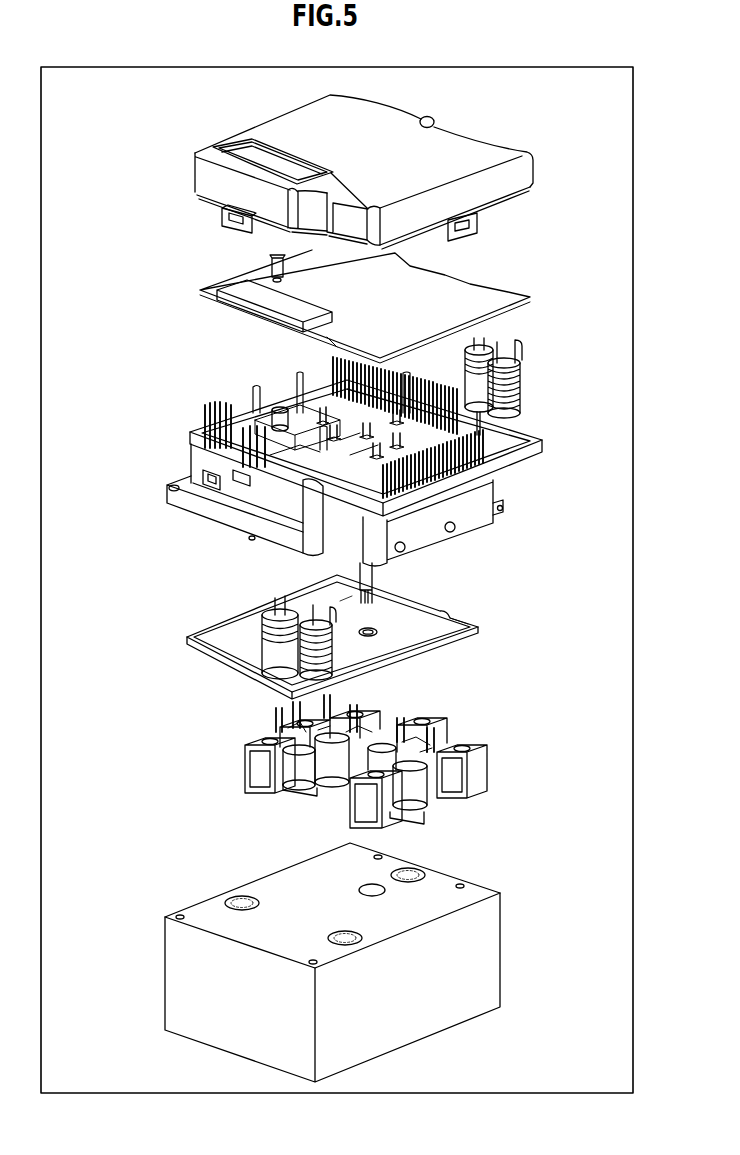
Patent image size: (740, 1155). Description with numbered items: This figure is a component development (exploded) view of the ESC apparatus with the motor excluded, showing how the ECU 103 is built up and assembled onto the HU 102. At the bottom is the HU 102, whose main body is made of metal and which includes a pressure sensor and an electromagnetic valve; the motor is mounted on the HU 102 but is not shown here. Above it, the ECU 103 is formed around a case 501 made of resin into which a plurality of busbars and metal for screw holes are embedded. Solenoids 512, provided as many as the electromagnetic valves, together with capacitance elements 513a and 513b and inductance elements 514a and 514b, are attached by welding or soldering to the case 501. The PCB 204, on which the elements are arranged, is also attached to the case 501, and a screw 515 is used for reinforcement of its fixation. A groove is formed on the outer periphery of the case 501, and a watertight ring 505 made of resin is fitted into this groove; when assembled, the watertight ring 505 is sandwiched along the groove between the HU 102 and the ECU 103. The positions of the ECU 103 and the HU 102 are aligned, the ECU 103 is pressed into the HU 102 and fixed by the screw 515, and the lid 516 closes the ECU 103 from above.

The ECU 103 is at (110, 114).
The lid of the ECU 516 is at (441, 131).
The screw 515 is at (280, 254).
The PCB 204 is at (515, 294).
The capacitance element 513b is at (482, 345).
The inductance element 514b is at (515, 363).
The case 501 is at (540, 453).
The watertight ring 505 is at (478, 624).
The capacitance element 513a is at (262, 623).
The inductance element 514a is at (300, 657).
The solenoids 512 is at (493, 700).
The HU 102 is at (490, 940).